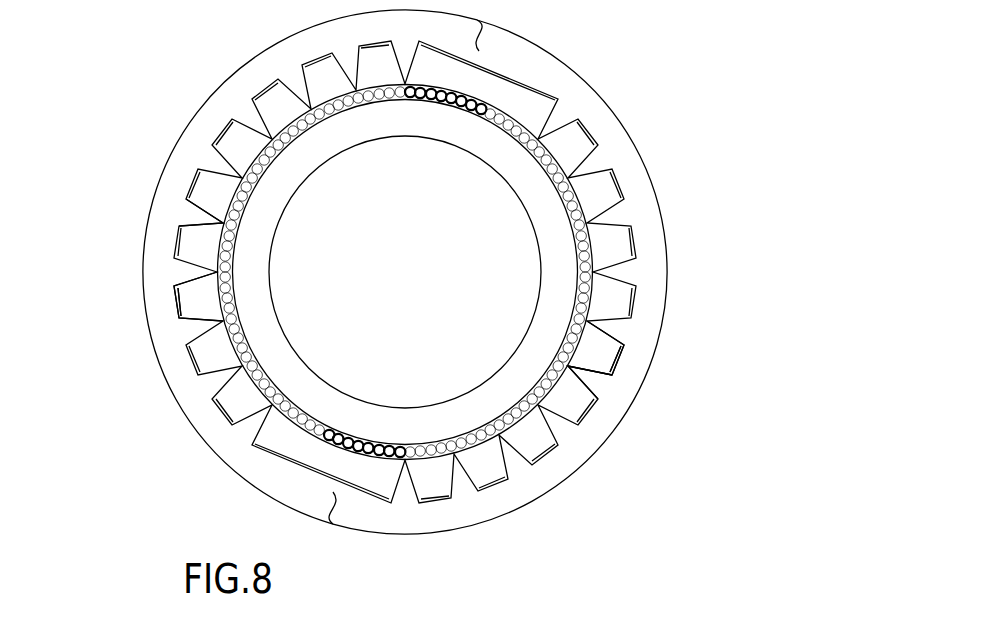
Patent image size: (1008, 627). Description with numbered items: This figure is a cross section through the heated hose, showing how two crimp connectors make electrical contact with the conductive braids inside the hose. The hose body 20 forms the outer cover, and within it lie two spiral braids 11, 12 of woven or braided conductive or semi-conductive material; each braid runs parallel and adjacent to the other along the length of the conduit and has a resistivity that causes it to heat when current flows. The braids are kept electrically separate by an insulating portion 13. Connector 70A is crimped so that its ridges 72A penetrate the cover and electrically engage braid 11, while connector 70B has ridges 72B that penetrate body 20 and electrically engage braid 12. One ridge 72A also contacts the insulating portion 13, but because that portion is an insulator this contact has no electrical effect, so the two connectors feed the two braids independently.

The spiral braid 11 is at (632, 247).
The spiral braid 12 is at (220, 300).
The insulating portion 13 is at (477, 98).
The body 20 is at (602, 350).
The connector 70A is at (642, 165).
The connector 70B is at (270, 50).
The ridges 72A is at (595, 382).
The ridges 72B is at (220, 223).